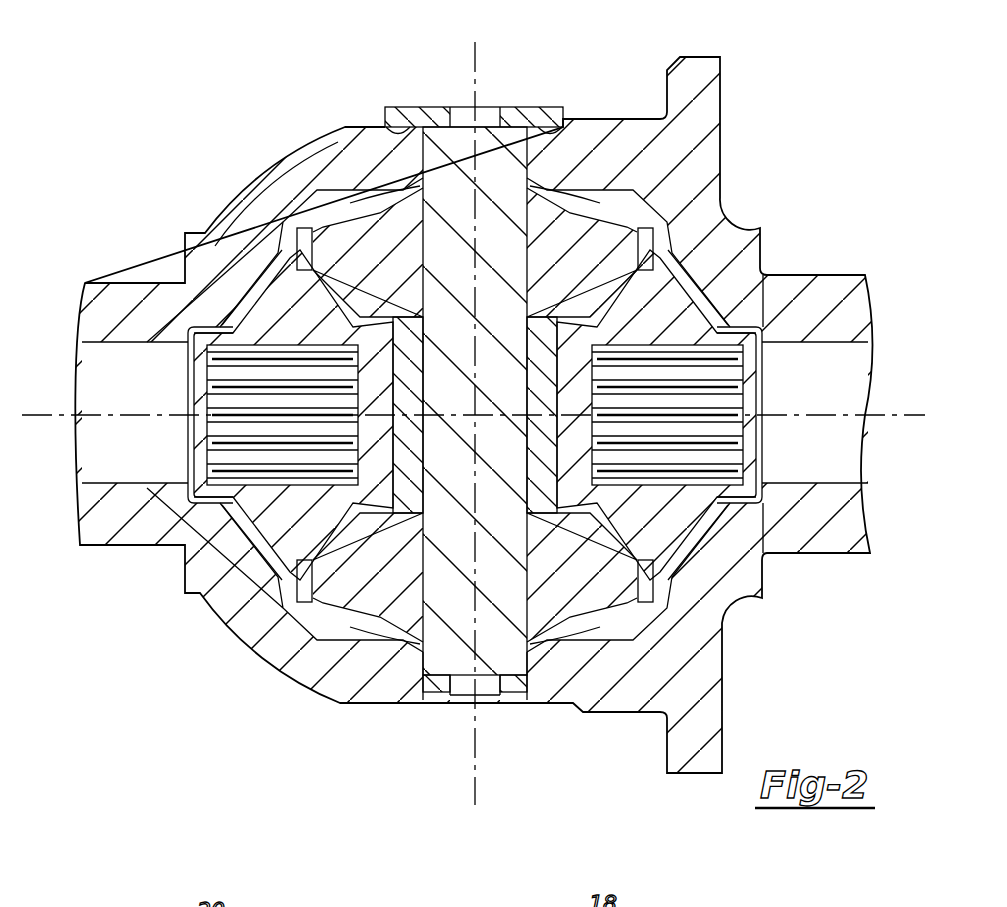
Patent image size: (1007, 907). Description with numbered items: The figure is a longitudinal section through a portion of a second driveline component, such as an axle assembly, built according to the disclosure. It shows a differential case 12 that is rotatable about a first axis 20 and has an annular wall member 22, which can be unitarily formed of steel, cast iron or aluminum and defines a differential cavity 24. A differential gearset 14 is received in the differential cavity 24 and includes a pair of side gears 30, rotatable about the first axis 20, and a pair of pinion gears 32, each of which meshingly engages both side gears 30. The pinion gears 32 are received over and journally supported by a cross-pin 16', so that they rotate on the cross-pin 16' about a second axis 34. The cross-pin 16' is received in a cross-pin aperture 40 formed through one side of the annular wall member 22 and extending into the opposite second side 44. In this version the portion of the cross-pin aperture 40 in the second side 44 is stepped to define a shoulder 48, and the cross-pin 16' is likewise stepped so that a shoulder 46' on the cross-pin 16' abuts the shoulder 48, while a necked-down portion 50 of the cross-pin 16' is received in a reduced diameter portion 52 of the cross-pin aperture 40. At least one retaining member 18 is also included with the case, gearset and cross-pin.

The differential case 12 is at (716, 104).
The differential gearset 14 is at (683, 288).
The cross-pin 16' is at (505, 368).
The retaining member 18 is at (417, 105).
The first axis 20 is at (907, 408).
The annular wall member 22 is at (291, 165).
The differential cavity 24 is at (628, 617).
The side gears 30 is at (273, 527).
The pinion gears 32 is at (345, 597).
The second axis 34 is at (484, 45).
The cross-pin aperture 40 is at (528, 667).
The second side 44 is at (372, 688).
The shoulder 46' is at (404, 736).
The shoulder 48 is at (513, 683).
The necked-down portion 50 is at (462, 688).
The reduced diameter portion 52 is at (500, 695).